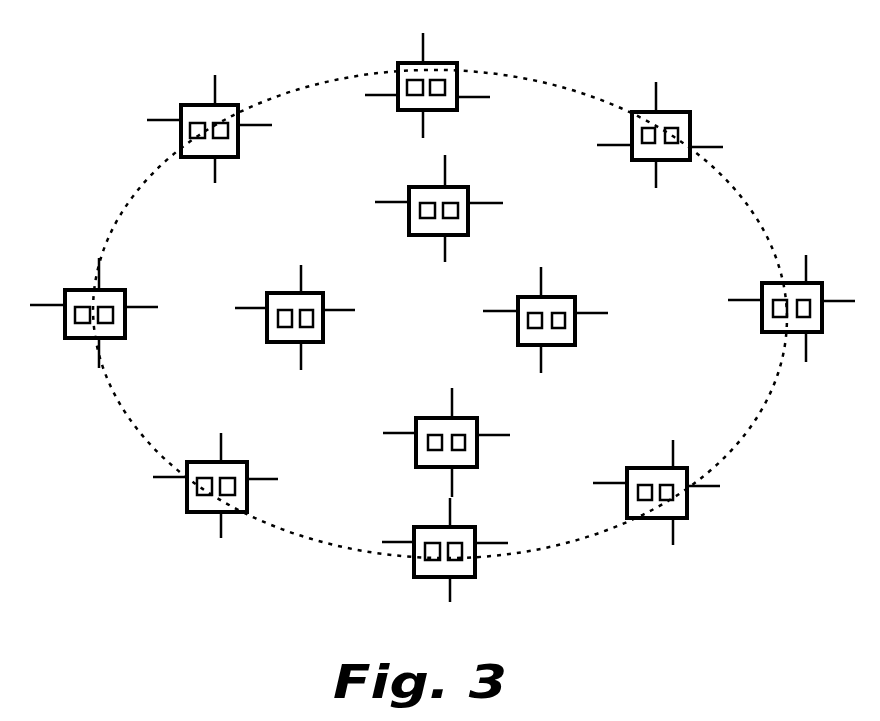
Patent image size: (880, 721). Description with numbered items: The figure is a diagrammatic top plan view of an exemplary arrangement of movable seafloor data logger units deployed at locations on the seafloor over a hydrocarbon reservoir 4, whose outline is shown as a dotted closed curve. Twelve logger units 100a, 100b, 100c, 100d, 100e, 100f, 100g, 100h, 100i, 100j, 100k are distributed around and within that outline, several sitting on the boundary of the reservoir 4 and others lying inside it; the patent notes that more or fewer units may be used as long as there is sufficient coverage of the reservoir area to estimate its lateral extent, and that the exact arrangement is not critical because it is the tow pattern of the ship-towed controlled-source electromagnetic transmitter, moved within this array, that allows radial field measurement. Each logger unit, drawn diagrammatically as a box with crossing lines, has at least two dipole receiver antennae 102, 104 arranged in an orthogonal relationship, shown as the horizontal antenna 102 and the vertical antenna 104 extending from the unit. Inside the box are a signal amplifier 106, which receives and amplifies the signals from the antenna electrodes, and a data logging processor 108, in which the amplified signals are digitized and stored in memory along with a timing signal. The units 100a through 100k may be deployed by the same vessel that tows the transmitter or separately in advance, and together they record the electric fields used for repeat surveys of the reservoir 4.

The hydrocarbon reservoir 4 is at (575, 118).
The logger unit 100a is at (192, 105).
The logger unit 100b is at (398, 72).
The logger unit 100c is at (630, 145).
The logger unit 100d is at (762, 298).
The logger unit 100e is at (628, 483).
The logger unit 100f is at (418, 432).
The logger unit 100g is at (203, 462).
The logger unit 100h is at (78, 290).
The logger unit 100i is at (280, 293).
The logger unit 100j is at (409, 195).
The logger unit 100k is at (532, 317).
The dipole receiver antenna 102 is at (165, 119).
The dipole receiver antenna 104 is at (217, 87).
The signal amplifier 106 is at (198, 138).
The data logging processor 108 is at (222, 135).